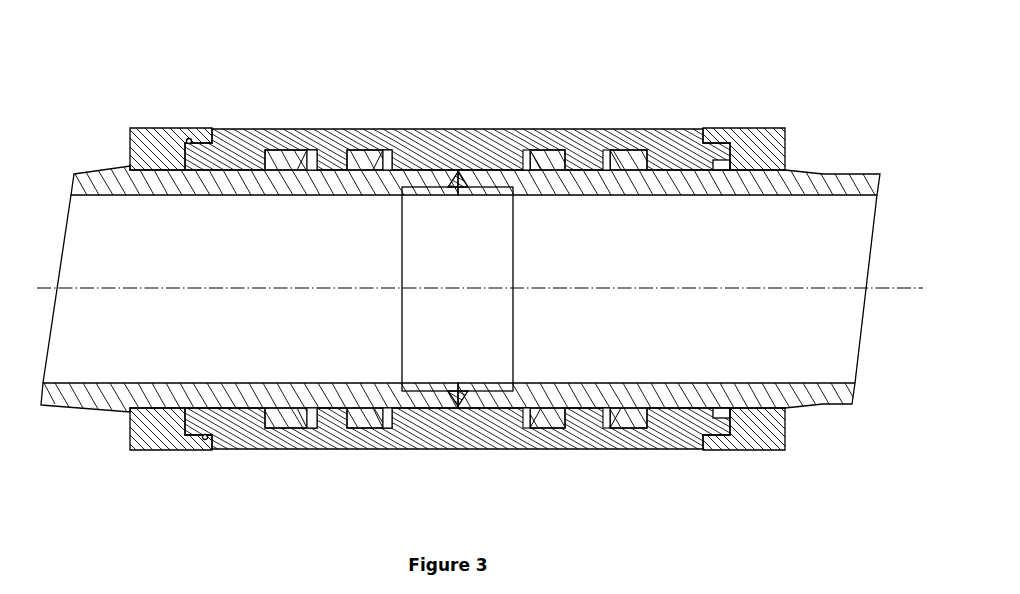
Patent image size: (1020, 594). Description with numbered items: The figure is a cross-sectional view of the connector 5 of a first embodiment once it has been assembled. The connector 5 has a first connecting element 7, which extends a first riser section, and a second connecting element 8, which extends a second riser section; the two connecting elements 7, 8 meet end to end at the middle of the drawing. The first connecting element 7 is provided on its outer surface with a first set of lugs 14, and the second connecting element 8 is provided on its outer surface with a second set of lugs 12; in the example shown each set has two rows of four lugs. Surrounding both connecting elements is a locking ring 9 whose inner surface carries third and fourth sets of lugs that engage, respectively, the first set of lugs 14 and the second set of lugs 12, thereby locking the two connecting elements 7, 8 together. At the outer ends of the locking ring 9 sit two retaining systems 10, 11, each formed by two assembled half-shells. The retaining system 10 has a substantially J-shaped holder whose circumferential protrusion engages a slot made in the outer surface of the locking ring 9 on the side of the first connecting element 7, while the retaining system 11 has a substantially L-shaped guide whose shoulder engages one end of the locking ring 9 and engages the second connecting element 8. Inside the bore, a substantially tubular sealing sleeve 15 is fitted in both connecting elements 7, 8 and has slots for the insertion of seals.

The connector 5 is at (480, 289).
The first connecting element 7 is at (185, 182).
The second connecting element 8 is at (747, 190).
The locking ring 9 is at (430, 128).
The retaining system 10 is at (165, 128).
The retaining system 11 is at (743, 128).
The second set of lugs 12 is at (622, 128).
The first set of lugs 14 is at (280, 128).
The sealing sleeve 15 is at (458, 173).